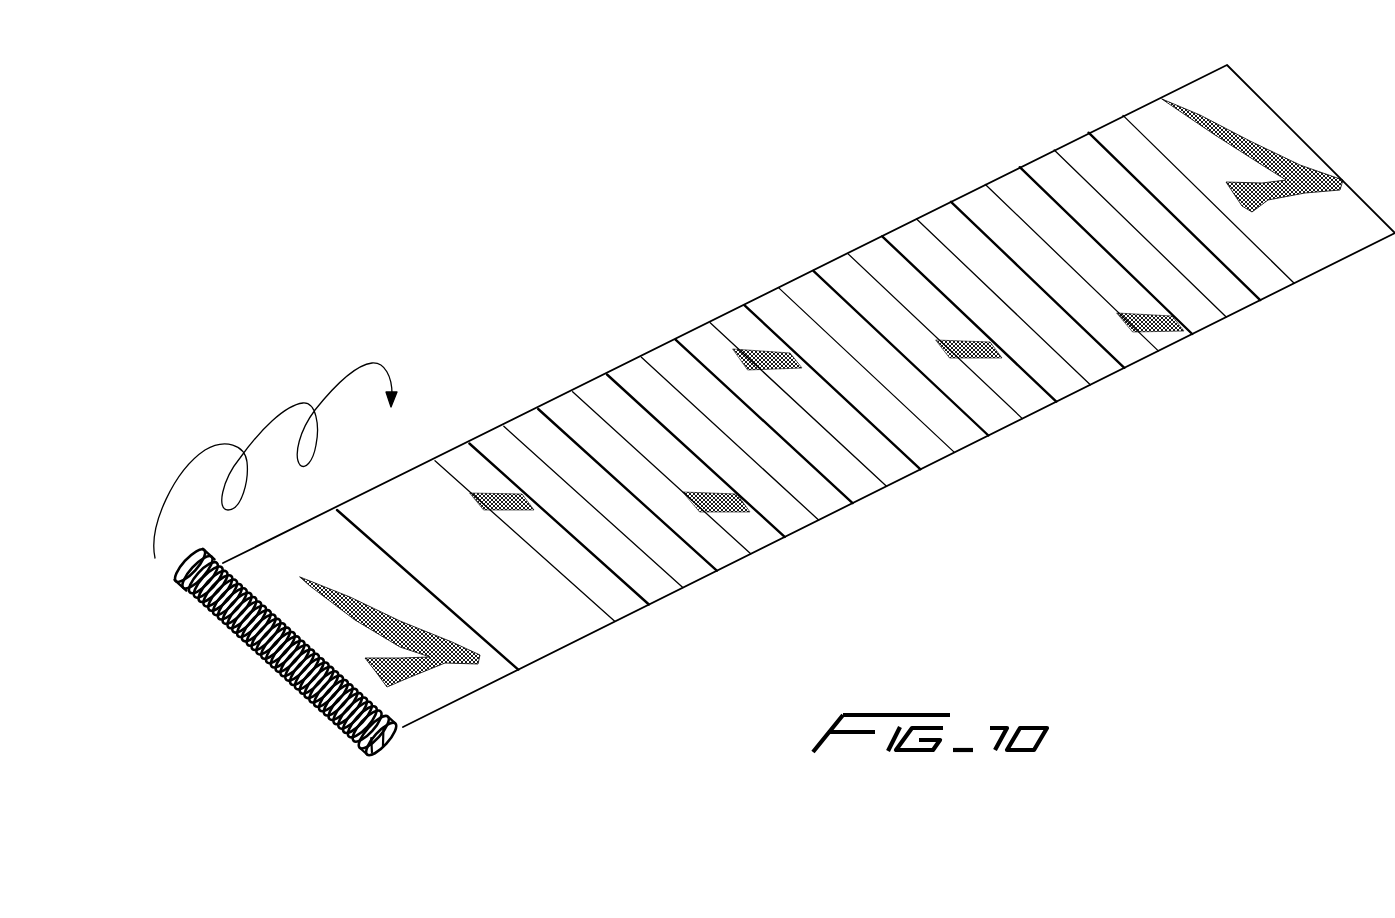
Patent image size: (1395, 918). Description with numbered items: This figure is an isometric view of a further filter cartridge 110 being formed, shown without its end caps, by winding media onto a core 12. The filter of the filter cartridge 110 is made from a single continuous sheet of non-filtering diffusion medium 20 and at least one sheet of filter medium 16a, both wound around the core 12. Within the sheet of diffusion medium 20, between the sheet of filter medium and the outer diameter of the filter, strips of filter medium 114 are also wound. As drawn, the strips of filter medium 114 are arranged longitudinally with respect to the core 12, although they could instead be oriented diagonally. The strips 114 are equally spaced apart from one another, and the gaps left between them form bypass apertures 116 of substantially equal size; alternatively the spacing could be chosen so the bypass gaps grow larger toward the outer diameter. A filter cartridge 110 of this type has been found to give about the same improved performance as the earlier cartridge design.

The core 12 is at (240, 642).
The sheet of diffusion medium 20 is at (1185, 102).
The filter cartridge 110 is at (131, 574).
The sheet of filter medium 16a is at (558, 620).
The strips of filter medium 114 is at (913, 437).
The bypass apertures 116 is at (1013, 190).